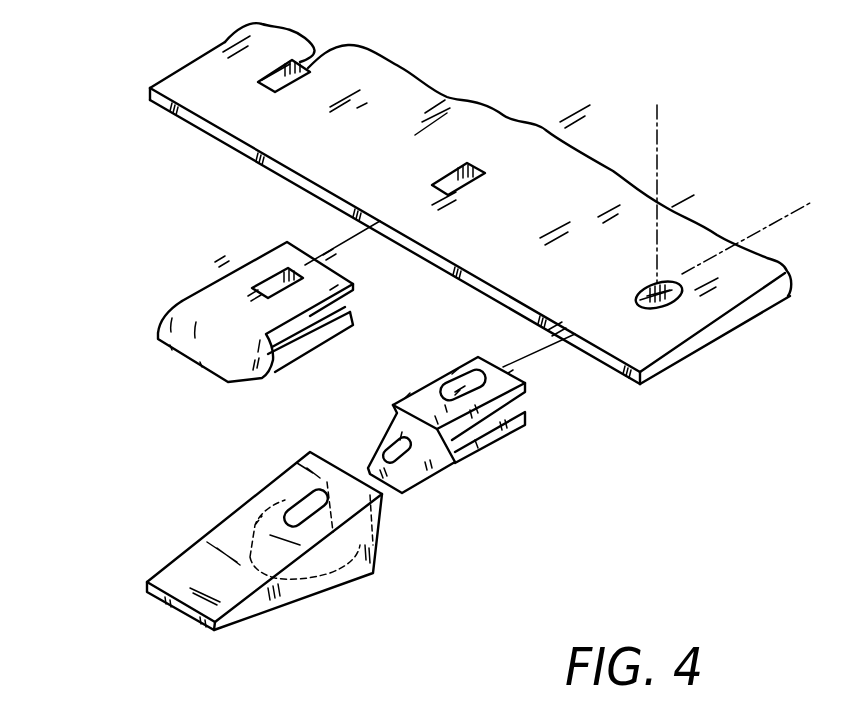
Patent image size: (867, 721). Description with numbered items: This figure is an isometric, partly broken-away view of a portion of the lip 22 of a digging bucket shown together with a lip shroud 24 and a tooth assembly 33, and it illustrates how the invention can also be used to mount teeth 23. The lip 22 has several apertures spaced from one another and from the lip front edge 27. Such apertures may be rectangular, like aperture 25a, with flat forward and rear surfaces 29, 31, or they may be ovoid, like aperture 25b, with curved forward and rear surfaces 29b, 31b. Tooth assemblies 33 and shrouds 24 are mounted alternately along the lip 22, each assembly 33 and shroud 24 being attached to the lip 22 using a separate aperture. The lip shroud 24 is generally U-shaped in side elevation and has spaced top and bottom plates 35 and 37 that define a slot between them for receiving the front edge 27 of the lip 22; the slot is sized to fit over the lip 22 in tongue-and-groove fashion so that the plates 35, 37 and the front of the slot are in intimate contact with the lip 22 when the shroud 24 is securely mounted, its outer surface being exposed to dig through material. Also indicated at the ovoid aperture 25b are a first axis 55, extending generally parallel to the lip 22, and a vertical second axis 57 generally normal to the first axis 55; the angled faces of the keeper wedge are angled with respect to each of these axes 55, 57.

The lip 22 is at (247, 137).
The teeth 23 is at (223, 547).
The lip shroud 24 is at (207, 318).
The aperture 25a is at (313, 70).
The aperture 25b is at (665, 304).
The lip front edge 27 is at (190, 118).
The flat forward surface 29 is at (287, 70).
The curved forward surface 29b is at (648, 297).
The flat rear surface 31 is at (302, 65).
The curved rear surface 31b is at (669, 284).
The tooth assembly 33 is at (373, 585).
The top plate 35 is at (277, 253).
The bottom plate 37 is at (323, 345).
The first axis 55 is at (788, 215).
The second axis 57 is at (657, 113).